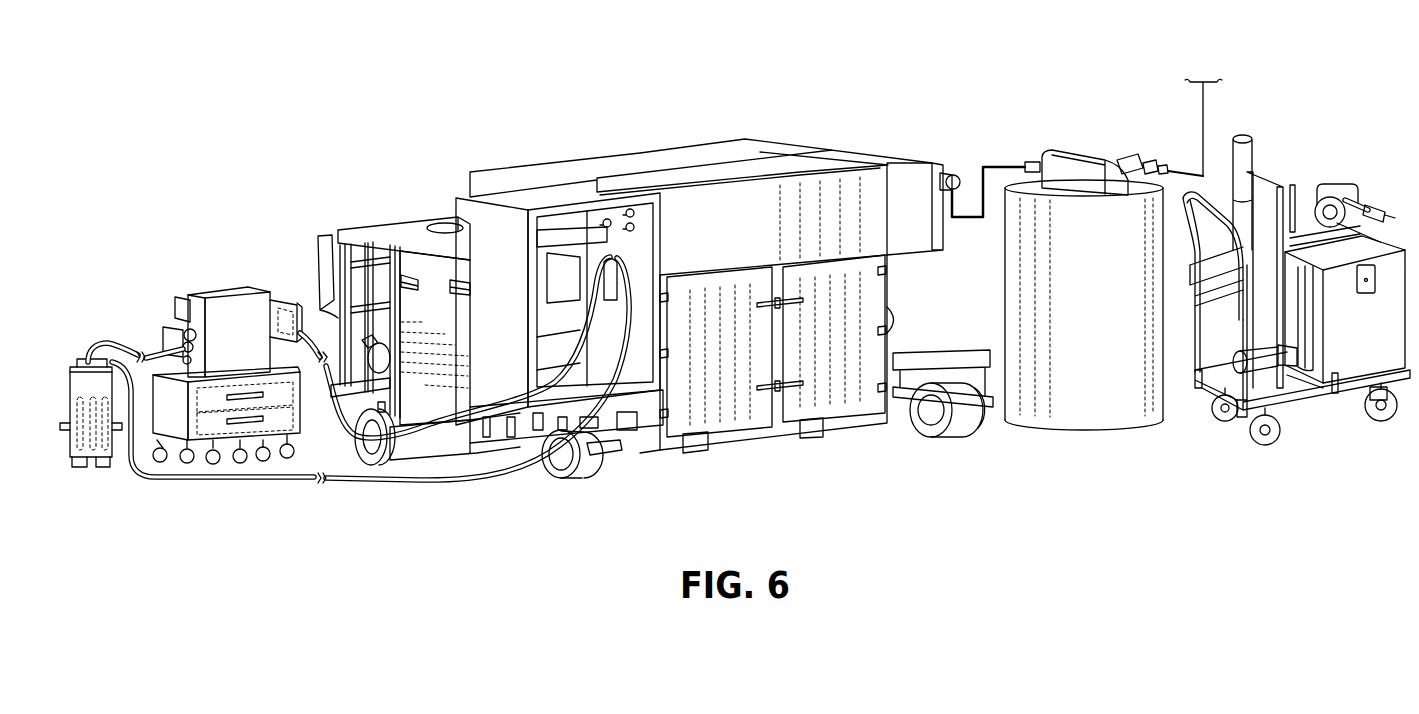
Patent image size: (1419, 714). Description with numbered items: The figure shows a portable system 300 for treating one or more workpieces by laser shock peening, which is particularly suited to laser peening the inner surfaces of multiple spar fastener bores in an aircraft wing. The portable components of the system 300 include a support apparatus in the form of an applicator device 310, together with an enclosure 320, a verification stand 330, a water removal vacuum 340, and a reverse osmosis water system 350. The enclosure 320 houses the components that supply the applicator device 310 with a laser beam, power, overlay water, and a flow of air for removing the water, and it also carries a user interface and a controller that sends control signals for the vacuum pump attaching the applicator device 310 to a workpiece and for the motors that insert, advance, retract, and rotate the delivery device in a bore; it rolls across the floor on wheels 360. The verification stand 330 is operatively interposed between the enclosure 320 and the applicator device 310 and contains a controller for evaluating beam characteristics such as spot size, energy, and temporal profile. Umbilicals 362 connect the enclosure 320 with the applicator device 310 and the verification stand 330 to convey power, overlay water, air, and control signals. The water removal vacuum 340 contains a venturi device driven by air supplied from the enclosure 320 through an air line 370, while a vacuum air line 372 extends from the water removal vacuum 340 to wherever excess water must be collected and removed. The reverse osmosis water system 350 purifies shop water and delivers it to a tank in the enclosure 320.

The system 300 is at (247, 118).
The applicator device 310 is at (72, 373).
The enclosure 320 is at (632, 165).
The verification stand 330 is at (215, 295).
The water removal vacuum 340 is at (1083, 157).
The reverse osmosis water system 350 is at (1307, 227).
The wheels 360 is at (572, 480).
The umbilicals 362 is at (108, 343).
The air line 370 is at (993, 163).
The vacuum air line 372 is at (1203, 110).